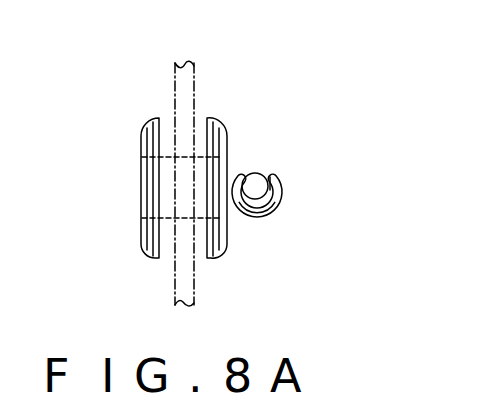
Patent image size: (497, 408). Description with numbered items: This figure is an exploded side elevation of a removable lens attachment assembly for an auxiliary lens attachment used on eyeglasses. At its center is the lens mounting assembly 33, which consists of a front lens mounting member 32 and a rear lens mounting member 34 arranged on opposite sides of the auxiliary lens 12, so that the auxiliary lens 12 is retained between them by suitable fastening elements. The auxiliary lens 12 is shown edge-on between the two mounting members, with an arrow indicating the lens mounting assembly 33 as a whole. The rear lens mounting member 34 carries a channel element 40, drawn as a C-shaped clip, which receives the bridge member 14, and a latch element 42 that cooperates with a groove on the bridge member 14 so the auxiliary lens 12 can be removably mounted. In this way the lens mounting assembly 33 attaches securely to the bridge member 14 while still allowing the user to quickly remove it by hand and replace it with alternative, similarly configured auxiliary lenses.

The auxiliary lens 12 is at (182, 277).
The bridge member 14 is at (254, 190).
The front lens mounting member 32 is at (152, 192).
The lens mounting assembly 33 is at (240, 87).
The rear lens mounting member 34 is at (219, 140).
The channel element 40 is at (283, 200).
The latch element 42 is at (262, 180).